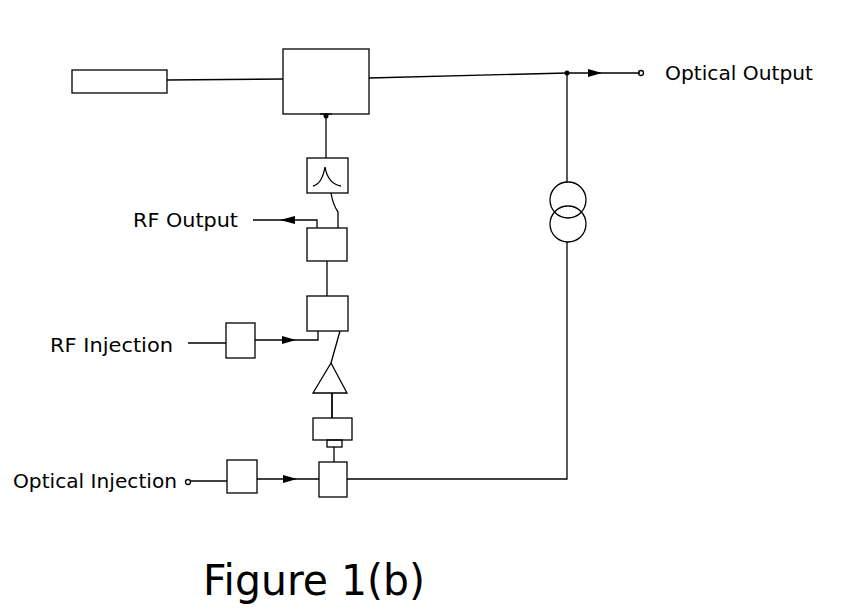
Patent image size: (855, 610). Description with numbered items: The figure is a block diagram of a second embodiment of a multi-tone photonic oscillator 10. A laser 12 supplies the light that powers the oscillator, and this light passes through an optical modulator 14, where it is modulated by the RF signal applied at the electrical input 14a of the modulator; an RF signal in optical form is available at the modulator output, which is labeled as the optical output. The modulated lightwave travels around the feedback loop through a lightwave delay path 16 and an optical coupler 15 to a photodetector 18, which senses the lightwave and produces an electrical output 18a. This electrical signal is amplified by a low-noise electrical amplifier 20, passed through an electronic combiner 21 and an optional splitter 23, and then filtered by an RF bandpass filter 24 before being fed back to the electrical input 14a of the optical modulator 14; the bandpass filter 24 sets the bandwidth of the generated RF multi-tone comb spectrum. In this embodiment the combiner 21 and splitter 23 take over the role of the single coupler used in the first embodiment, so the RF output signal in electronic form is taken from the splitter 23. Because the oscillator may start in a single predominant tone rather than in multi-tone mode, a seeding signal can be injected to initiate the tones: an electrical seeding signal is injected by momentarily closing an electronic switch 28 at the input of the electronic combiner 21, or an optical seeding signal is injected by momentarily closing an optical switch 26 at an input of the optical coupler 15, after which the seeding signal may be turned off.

The multi-tone photonic oscillator 10 is at (490, 211).
The laser 12 is at (98, 75).
The optical modulator 14 is at (356, 60).
The electrical input 14a is at (326, 118).
The RF bandpass filter 24 is at (348, 170).
The splitter 23 is at (347, 240).
The electronic combiner 21 is at (348, 308).
The electronic switch 28 is at (240, 337).
The low-noise electrical amplifier 20 is at (338, 382).
The photodetector 18 is at (347, 428).
The electrical output 18a is at (332, 414).
The optical switch 26 is at (250, 487).
The optical coupler 15 is at (343, 488).
The lightwave delay path 16 is at (602, 208).